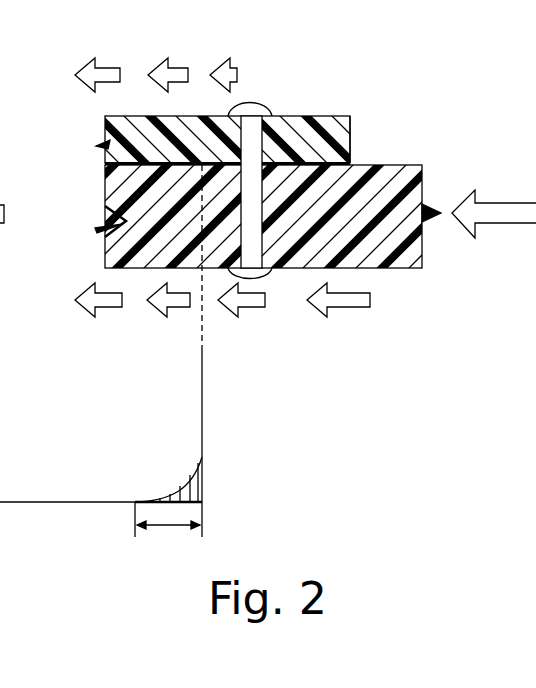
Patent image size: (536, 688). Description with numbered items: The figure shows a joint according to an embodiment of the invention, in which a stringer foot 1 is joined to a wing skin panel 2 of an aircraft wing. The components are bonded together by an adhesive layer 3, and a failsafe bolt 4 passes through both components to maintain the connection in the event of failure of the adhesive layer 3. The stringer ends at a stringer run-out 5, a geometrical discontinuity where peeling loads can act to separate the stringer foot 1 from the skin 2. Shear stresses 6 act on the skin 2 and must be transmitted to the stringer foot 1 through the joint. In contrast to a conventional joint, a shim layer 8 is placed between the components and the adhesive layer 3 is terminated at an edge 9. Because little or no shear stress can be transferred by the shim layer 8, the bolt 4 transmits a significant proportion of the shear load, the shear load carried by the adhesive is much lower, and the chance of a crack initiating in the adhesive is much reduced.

The stringer foot 1 is at (141, 126).
The wing skin panel 2 is at (125, 183).
The adhesive layer 3 is at (125, 247).
The failsafe bolt 4 is at (252, 140).
The stringer run-out 5 is at (338, 151).
The shear stresses 6 is at (488, 212).
The shim layer 8 is at (307, 162).
The edge 9 is at (203, 164).